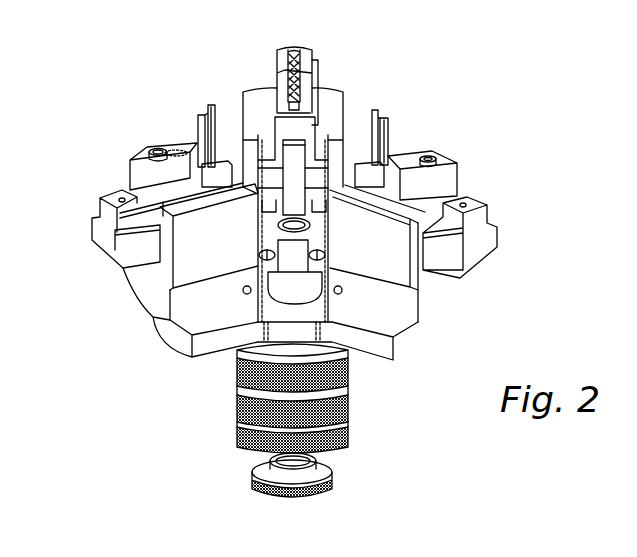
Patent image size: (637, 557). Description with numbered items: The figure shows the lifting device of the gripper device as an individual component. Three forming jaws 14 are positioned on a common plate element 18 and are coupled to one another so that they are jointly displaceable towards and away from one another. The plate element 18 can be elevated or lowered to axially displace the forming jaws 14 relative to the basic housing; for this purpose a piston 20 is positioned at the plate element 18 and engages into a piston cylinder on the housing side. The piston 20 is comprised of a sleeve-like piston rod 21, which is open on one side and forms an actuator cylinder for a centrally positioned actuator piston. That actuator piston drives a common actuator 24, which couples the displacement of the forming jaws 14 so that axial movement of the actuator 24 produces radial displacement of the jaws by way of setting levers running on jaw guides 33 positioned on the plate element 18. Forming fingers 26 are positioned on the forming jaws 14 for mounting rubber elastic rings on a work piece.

The forming jaws 14 is at (317, 82).
The plate element 18 is at (215, 343).
The piston 20 is at (340, 472).
The piston rod 21 is at (245, 423).
The actuator 24 is at (290, 246).
The fingers 26 is at (277, 62).
The jaw guides 33 is at (437, 292).